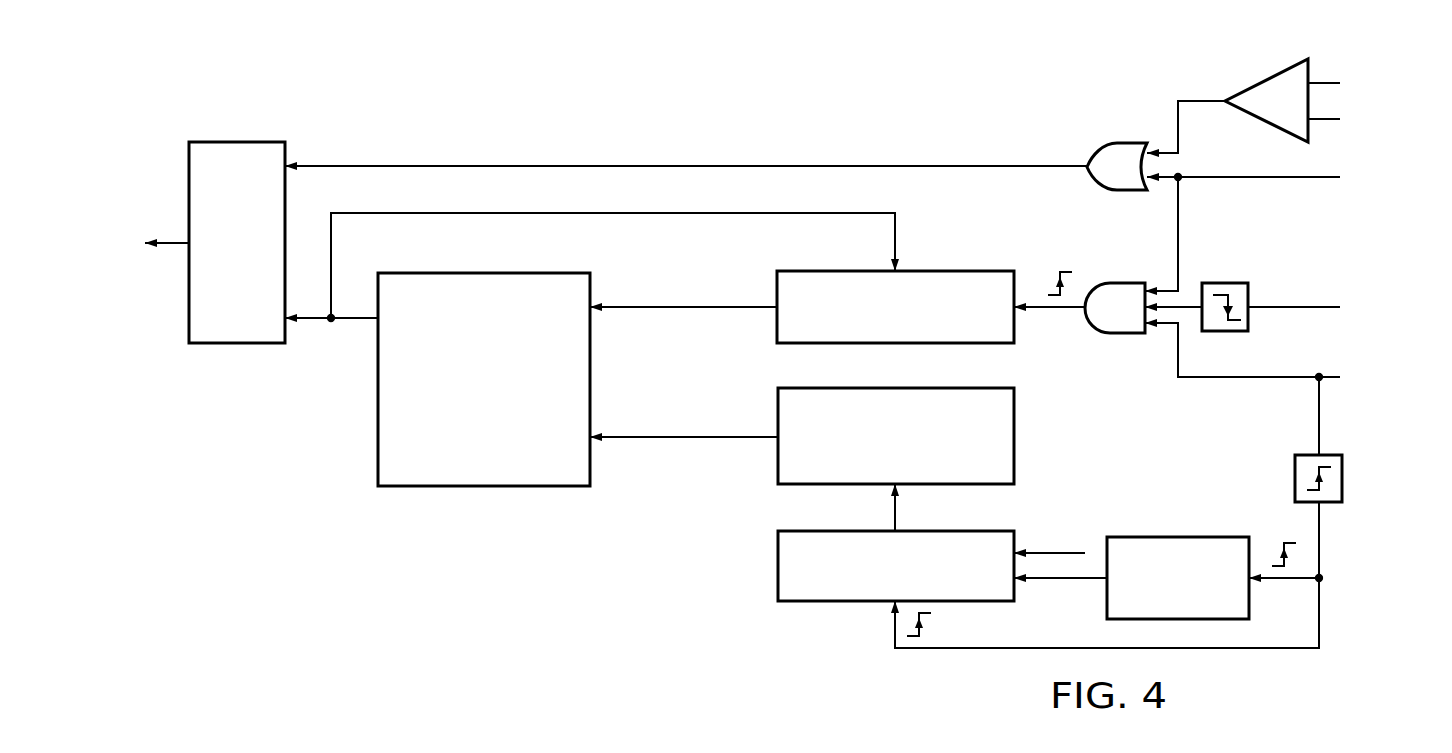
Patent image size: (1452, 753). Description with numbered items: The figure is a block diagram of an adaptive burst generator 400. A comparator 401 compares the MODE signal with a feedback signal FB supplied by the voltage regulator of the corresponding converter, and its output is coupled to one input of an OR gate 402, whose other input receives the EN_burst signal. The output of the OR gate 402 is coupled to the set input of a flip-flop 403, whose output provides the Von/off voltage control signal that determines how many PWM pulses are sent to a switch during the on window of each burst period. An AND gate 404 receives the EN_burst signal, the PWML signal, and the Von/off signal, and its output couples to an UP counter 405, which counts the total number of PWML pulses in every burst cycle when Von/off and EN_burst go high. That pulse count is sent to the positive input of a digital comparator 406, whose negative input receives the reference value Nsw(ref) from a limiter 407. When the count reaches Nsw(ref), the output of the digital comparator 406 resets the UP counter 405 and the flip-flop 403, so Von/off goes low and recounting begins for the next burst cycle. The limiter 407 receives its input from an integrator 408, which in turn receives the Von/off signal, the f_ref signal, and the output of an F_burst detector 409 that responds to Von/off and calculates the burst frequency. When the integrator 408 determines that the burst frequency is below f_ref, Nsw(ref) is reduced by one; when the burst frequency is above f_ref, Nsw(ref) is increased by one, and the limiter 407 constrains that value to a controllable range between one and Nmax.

The adaptive burst generator 400 is at (507, 72).
The comparator 401 is at (1268, 80).
The OR gate 402 is at (1132, 143).
The flip-flop 403 is at (237, 142).
The AND gate 404 is at (1120, 283).
The UP counter 405 is at (930, 271).
The digital comparator 406 is at (488, 486).
The limiter 407 is at (1014, 459).
The integrator 408 is at (860, 601).
The F_burst detector 409 is at (1178, 537).